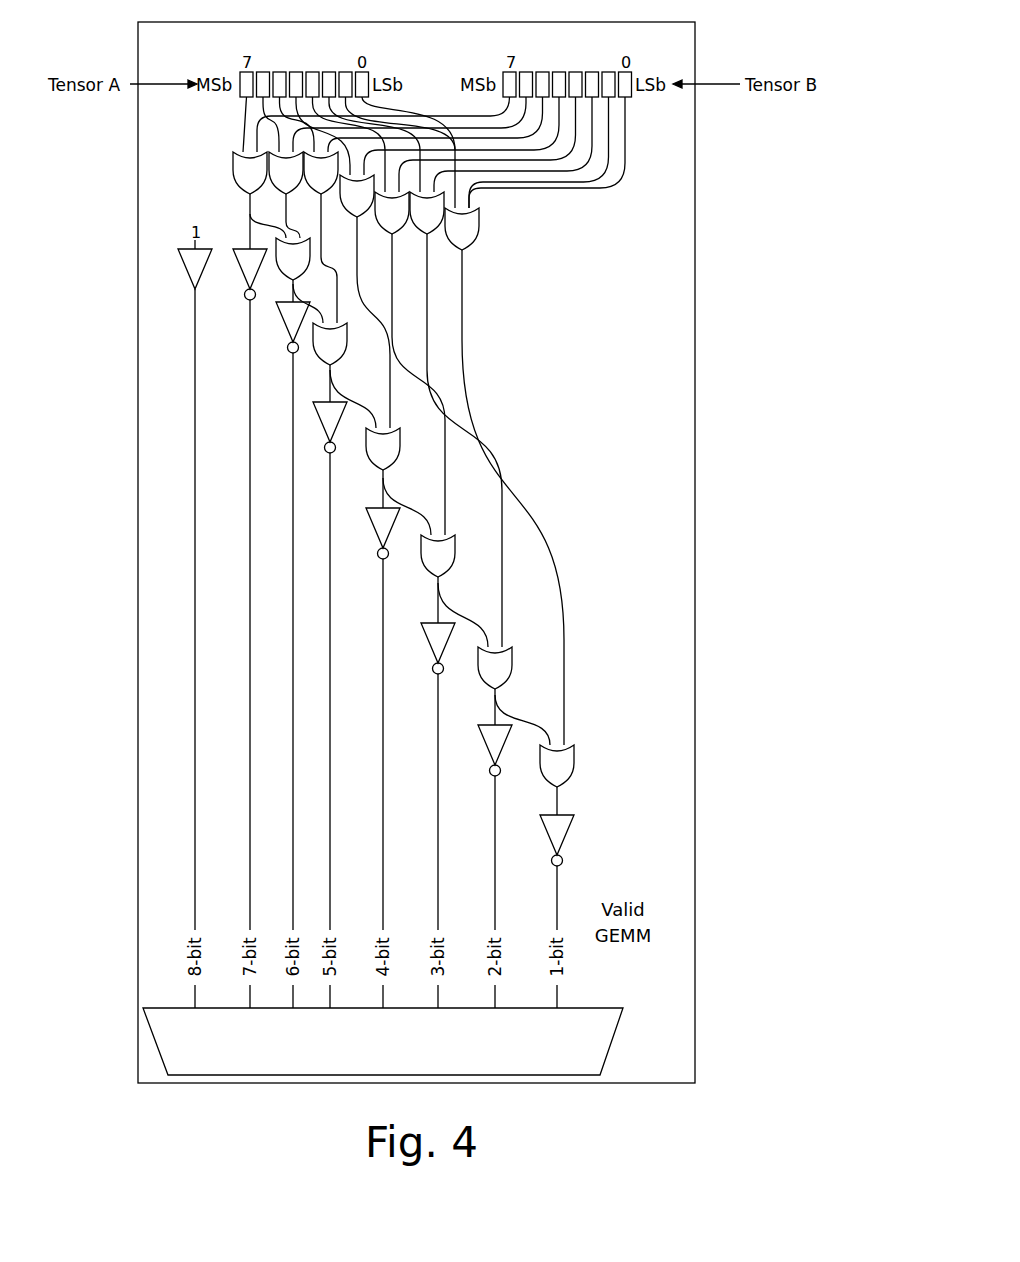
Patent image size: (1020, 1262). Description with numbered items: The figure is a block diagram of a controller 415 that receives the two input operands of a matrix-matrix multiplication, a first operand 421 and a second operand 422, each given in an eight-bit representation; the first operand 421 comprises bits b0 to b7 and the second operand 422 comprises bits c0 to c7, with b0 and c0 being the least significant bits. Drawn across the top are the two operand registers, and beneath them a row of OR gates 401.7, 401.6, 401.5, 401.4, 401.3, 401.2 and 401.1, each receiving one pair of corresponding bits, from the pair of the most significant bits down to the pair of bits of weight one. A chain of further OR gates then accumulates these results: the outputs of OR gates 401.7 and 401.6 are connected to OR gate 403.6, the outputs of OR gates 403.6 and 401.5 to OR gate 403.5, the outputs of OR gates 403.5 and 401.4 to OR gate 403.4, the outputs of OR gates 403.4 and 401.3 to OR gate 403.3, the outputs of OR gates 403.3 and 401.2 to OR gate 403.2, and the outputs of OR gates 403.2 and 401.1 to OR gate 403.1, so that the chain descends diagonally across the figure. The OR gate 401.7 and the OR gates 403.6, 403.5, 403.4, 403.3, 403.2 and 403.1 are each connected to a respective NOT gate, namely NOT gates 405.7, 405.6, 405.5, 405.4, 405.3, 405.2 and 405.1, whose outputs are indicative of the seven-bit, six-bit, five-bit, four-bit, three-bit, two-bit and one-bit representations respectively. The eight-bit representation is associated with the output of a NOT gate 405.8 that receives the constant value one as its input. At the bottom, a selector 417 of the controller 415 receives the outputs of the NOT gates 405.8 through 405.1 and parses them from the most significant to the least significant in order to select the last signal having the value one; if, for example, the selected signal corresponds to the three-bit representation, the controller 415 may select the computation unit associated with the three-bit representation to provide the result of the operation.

The controller 415 is at (695, 440).
The selector 417 is at (600, 1008).
The first operand 421 is at (293, 72).
The second operand 422 is at (562, 72).
The OR gate 401.7 is at (236, 152).
The OR gate 401.6 is at (271, 172).
The OR gate 401.5 is at (306, 185).
The OR gate 401.4 is at (471, 190).
The OR gate 401.3 is at (401, 242).
The OR gate 401.2 is at (468, 242).
The OR gate 401.1 is at (478, 226).
The OR gate 403.6 is at (311, 265).
The OR gate 403.5 is at (349, 352).
The OR gate 403.4 is at (401, 452).
The OR gate 403.3 is at (455, 565).
The OR gate 403.2 is at (513, 673).
The OR gate 403.1 is at (575, 772).
The NOT gate 405.8 is at (195, 290).
The NOT gate 405.7 is at (250, 272).
The NOT gate 405.6 is at (293, 335).
The NOT gate 405.5 is at (330, 433).
The NOT gate 405.4 is at (383, 540).
The NOT gate 405.3 is at (438, 655).
The NOT gate 405.2 is at (495, 765).
The NOT gate 405.1 is at (557, 850).